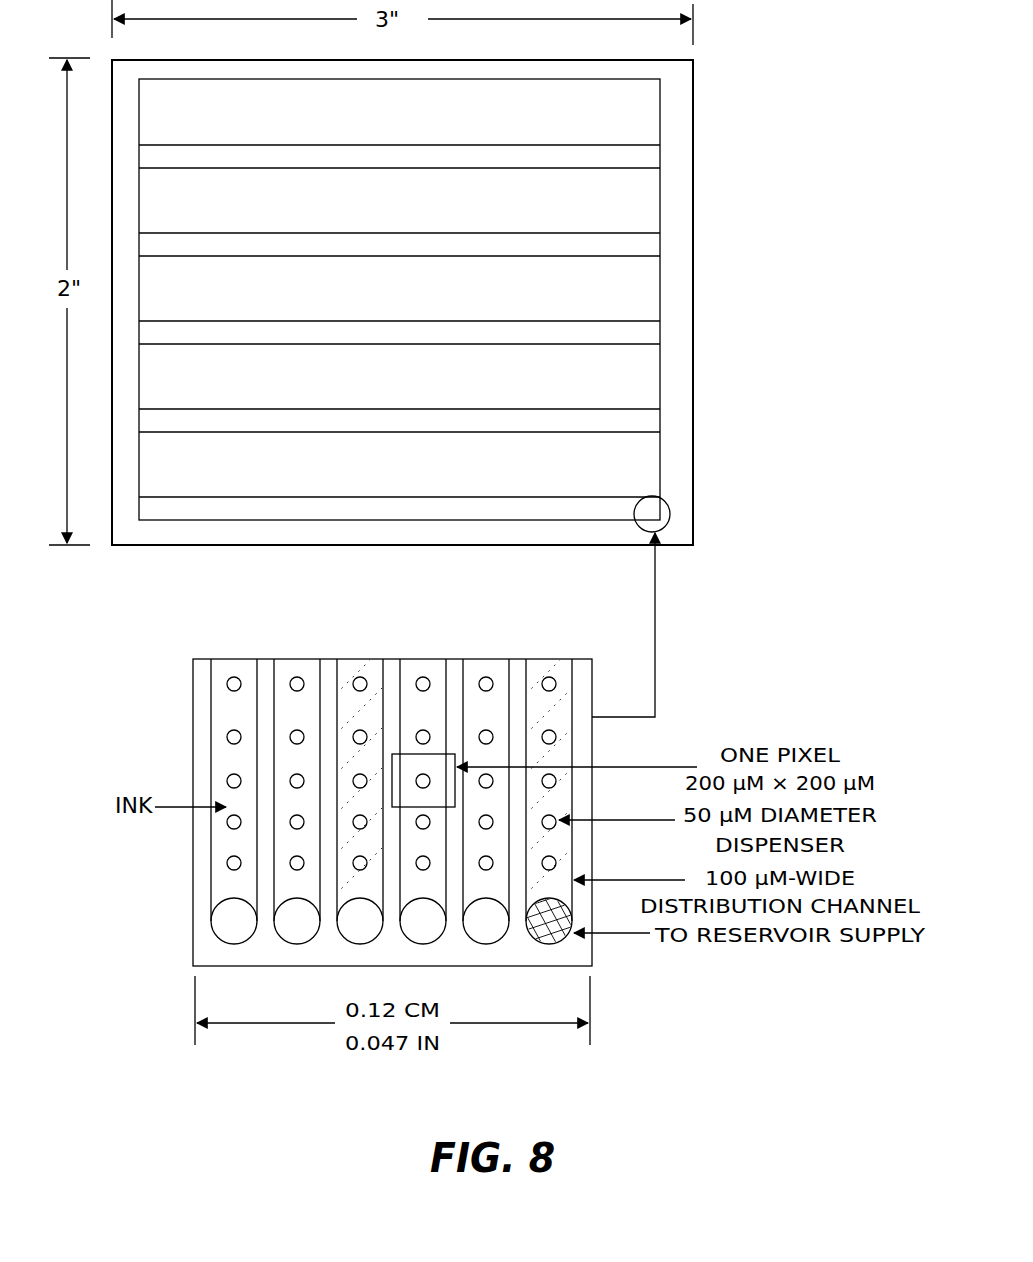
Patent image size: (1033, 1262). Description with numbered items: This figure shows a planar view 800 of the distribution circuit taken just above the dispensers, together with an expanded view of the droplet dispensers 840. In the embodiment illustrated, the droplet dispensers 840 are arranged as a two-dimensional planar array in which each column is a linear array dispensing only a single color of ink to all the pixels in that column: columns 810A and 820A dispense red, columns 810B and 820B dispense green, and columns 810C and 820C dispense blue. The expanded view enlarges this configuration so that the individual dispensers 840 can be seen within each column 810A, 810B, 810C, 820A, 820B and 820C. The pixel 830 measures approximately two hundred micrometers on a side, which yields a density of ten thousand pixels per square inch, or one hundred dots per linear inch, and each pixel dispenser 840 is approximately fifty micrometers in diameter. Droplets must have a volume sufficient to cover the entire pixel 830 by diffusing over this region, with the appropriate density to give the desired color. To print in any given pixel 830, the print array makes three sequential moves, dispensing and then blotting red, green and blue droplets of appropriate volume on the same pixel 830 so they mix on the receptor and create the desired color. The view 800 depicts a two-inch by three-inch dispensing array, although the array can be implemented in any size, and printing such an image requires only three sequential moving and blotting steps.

The planar view 800 is at (724, 286).
The column 810A is at (231, 657).
The column 810B is at (303, 657).
The column 810C is at (362, 657).
The column 820A is at (424, 657).
The column 820B is at (484, 657).
The column 820C is at (546, 657).
The pixel 830 is at (449, 808).
The droplet dispenser 840 is at (226, 684).